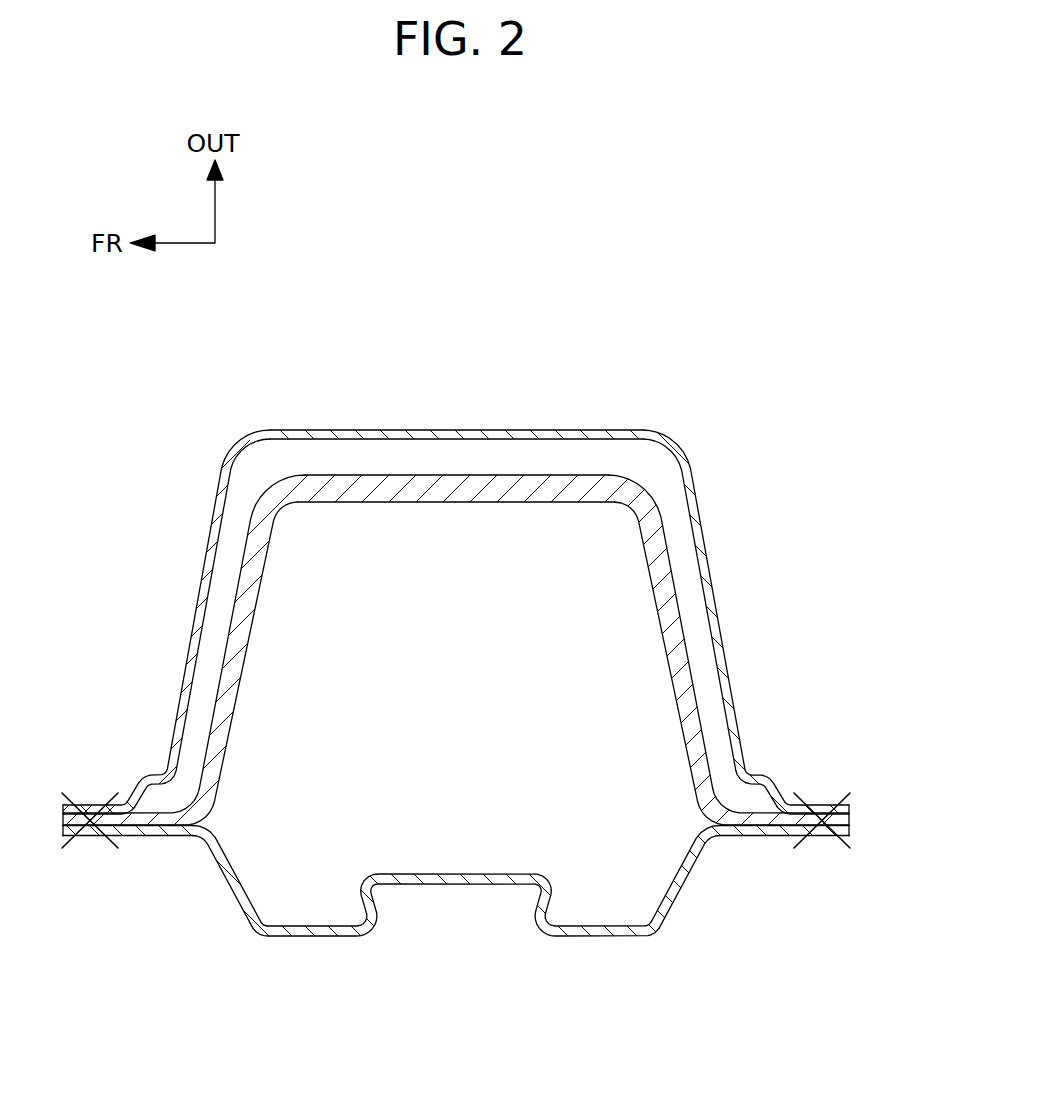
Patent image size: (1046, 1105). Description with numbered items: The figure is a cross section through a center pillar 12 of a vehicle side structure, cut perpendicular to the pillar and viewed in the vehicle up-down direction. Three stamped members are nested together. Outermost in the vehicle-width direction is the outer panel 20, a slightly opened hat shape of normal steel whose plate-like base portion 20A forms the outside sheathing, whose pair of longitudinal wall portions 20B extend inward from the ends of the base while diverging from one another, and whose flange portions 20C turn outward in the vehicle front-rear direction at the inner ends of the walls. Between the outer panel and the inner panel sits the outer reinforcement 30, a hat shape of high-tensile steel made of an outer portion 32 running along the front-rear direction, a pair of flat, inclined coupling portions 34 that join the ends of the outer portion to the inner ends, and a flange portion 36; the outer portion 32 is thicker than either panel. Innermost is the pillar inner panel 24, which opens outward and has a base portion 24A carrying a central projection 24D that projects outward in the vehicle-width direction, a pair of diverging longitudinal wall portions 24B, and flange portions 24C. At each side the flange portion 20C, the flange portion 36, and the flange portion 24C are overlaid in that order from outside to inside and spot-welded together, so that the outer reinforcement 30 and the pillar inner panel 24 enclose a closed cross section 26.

The center pillar 12 is at (718, 265).
The outer panel 20 is at (457, 602).
The base portion 20A is at (333, 429).
The longitudinal wall portions 20B is at (205, 557).
The flange portion 20C is at (87, 805).
The pillar inner panel 24 is at (456, 938).
The base portion 24A is at (304, 938).
The longitudinal wall portions 24B is at (225, 888).
The flange portion 24C is at (84, 838).
The projection 24D is at (435, 887).
The closed cross section 26 is at (497, 814).
The outer reinforcement 30 is at (456, 602).
The outer portion 32 is at (457, 474).
The coupling portions 34 is at (230, 630).
The flange portion 36 is at (147, 810).